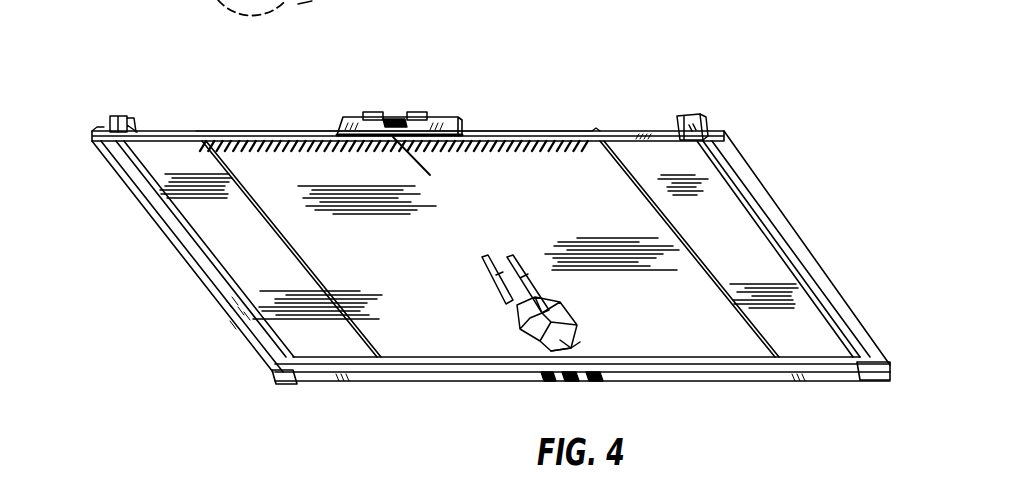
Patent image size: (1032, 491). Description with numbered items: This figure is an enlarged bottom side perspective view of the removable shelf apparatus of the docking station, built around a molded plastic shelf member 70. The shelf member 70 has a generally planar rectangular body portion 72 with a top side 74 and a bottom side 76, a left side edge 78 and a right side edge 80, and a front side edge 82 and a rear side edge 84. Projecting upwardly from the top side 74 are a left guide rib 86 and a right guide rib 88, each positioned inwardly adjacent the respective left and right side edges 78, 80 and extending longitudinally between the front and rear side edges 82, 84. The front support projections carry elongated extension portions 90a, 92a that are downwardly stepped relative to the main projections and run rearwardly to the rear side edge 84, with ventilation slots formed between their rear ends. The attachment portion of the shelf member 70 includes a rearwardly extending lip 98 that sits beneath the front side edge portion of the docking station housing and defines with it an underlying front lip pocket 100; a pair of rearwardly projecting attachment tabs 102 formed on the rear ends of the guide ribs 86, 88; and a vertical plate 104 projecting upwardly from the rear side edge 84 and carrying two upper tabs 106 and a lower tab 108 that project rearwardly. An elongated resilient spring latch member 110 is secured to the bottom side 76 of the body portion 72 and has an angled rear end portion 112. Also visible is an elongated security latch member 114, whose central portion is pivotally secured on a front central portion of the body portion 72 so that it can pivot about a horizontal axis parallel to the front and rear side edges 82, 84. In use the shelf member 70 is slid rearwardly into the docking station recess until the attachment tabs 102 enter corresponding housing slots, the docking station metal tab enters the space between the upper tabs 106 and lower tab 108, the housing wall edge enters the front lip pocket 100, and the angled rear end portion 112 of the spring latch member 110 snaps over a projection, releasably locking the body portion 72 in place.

The shelf member 70 is at (468, 225).
The body portion 72 is at (206, 286).
The top side 74 is at (640, 132).
The bottom side 76 is at (590, 233).
The left side edge 78 is at (778, 230).
The right side edge 80 is at (148, 206).
The front side edge 82 is at (872, 383).
The rear side edge 84 is at (158, 132).
The left guide rib 86 is at (688, 113).
The right guide rib 88 is at (114, 117).
The extension portion 90a is at (594, 132).
The extension portion 92a is at (200, 132).
The lip 98 is at (392, 377).
The front lip pocket 100 is at (672, 368).
The attachment tabs 102 is at (110, 117).
The vertical plate 104 is at (448, 116).
The upper tabs 106 is at (374, 112).
The lower tab 108 is at (394, 115).
The spring latch member 110 is at (510, 305).
The angled rear end portion 112 is at (498, 295).
The security latch member 114 is at (529, 334).